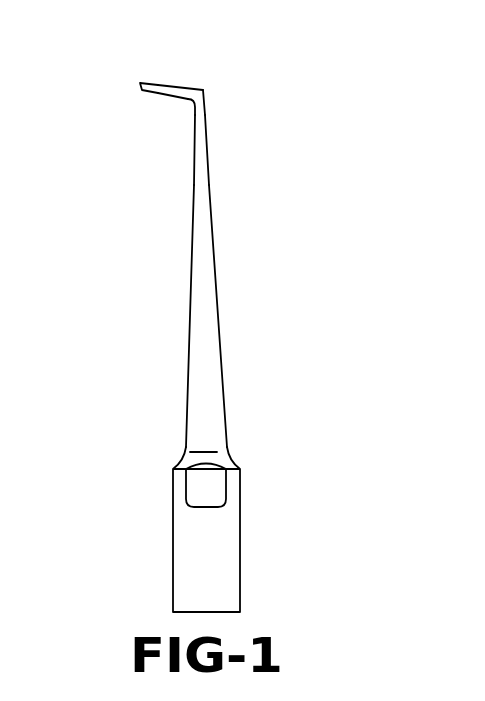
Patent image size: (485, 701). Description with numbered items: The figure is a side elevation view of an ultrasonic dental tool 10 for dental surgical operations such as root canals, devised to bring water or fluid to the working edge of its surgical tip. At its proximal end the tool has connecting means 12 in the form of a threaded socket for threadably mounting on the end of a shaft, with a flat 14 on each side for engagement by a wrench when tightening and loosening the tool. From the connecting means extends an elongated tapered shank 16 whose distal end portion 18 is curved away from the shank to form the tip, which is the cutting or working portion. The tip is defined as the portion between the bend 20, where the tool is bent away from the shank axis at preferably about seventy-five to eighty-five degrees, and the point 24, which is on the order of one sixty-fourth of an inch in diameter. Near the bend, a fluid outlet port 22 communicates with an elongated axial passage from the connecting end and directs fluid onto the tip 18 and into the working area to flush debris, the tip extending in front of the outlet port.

The tool 10 is at (142, 364).
The connecting means 12 is at (212, 555).
The flat 14 is at (195, 490).
The tapered shank 16 is at (205, 326).
The distal end portion 18 is at (173, 86).
The bend 20 is at (201, 96).
The fluid outlet port 22 is at (195, 172).
The point 24 is at (140, 82).